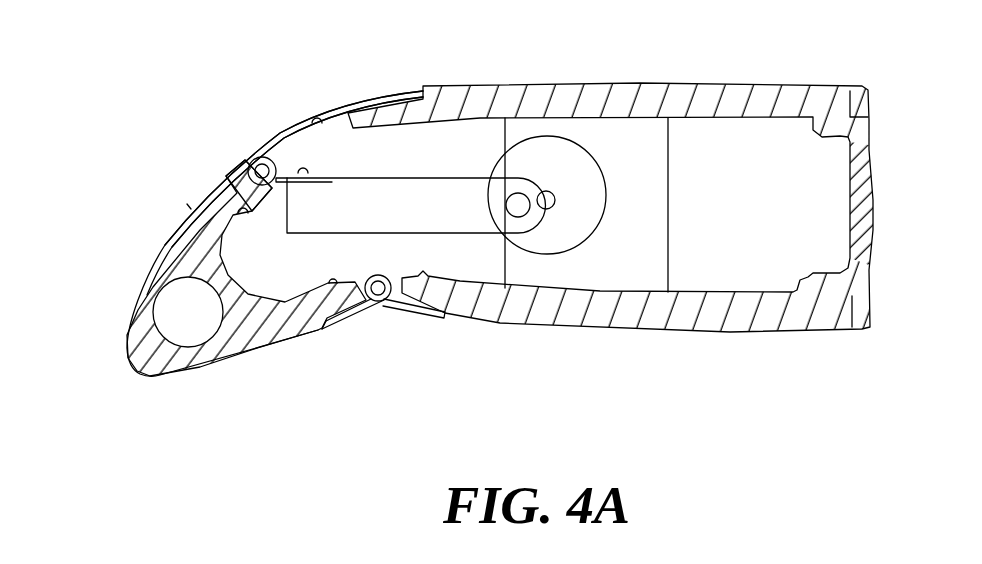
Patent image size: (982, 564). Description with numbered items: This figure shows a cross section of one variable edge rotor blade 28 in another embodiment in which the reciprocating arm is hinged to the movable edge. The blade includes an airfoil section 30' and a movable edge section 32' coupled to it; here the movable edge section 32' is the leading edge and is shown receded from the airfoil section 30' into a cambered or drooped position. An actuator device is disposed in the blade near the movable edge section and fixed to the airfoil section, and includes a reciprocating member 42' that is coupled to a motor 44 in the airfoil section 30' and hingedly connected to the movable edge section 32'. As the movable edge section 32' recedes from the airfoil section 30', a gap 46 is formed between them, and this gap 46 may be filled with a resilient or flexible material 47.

The variable edge rotor blade 28 is at (198, 46).
The airfoil section 30' is at (610, 173).
The movable edge section 32' is at (231, 233).
The reciprocating member 42' is at (441, 266).
The motor 44 is at (618, 277).
The gap 46 is at (296, 143).
The resilient or flexible material 47 is at (250, 167).